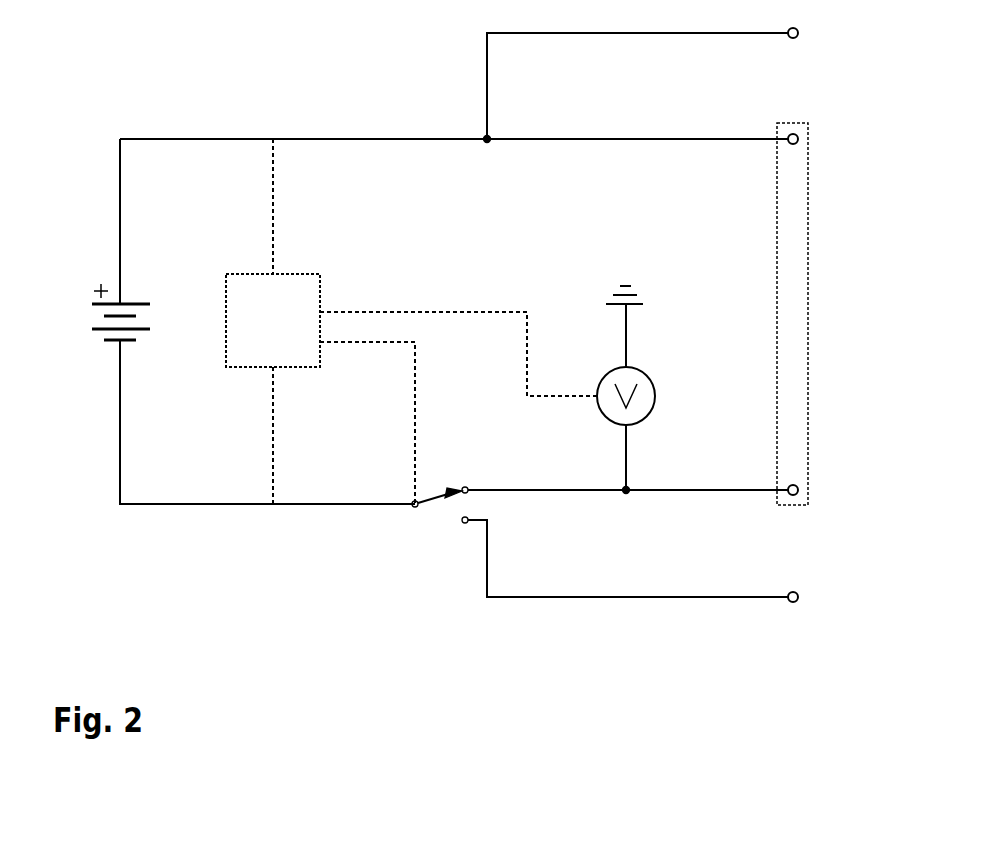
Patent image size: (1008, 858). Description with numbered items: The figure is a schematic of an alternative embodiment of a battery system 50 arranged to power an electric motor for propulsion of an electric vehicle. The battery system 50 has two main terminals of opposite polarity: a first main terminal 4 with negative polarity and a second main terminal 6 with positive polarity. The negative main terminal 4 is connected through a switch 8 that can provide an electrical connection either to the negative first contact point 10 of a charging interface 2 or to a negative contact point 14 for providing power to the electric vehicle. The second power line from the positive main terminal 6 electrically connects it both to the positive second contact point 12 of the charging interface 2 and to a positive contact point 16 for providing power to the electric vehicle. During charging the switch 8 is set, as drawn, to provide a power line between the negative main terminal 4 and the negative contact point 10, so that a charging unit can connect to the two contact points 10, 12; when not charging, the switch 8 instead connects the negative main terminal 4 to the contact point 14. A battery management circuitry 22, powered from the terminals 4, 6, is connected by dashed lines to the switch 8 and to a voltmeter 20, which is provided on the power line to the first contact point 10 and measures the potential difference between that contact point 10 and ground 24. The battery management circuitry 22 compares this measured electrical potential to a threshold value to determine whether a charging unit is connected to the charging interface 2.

The charging interface 2 is at (813, 314).
The first main terminal 4 is at (106, 347).
The second main terminal 6 is at (85, 271).
The switch 8 is at (600, 513).
The first contact point 10 is at (828, 506).
The second contact point 12 is at (828, 126).
The negative contact point 14 is at (828, 614).
The positive contact point 16 is at (828, 26).
The voltmeter 20 is at (648, 424).
The battery management circuitry 22 is at (411, 367).
The ground 24 is at (605, 313).
The battery system 50 is at (362, 72).